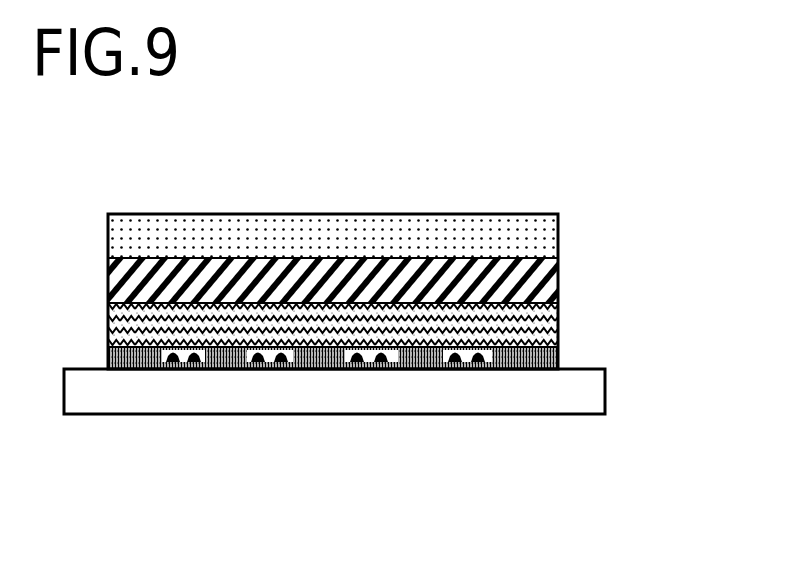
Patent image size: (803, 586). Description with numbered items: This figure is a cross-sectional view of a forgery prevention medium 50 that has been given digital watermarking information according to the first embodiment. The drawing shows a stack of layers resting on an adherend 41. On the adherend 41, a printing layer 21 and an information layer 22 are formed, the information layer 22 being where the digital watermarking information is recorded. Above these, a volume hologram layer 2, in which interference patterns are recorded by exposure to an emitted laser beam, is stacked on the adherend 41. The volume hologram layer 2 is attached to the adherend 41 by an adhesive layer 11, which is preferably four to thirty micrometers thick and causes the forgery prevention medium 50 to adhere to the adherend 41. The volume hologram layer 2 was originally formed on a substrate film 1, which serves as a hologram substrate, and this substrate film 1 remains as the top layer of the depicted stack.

The forgery prevention medium 50 is at (508, 146).
The substrate film 1 is at (538, 243).
The volume hologram layer 2 is at (538, 280).
The adhesive layer 11 is at (540, 327).
The printing layer 21 is at (558, 357).
The information layer 22 is at (497, 369).
The adherend 41 is at (558, 389).